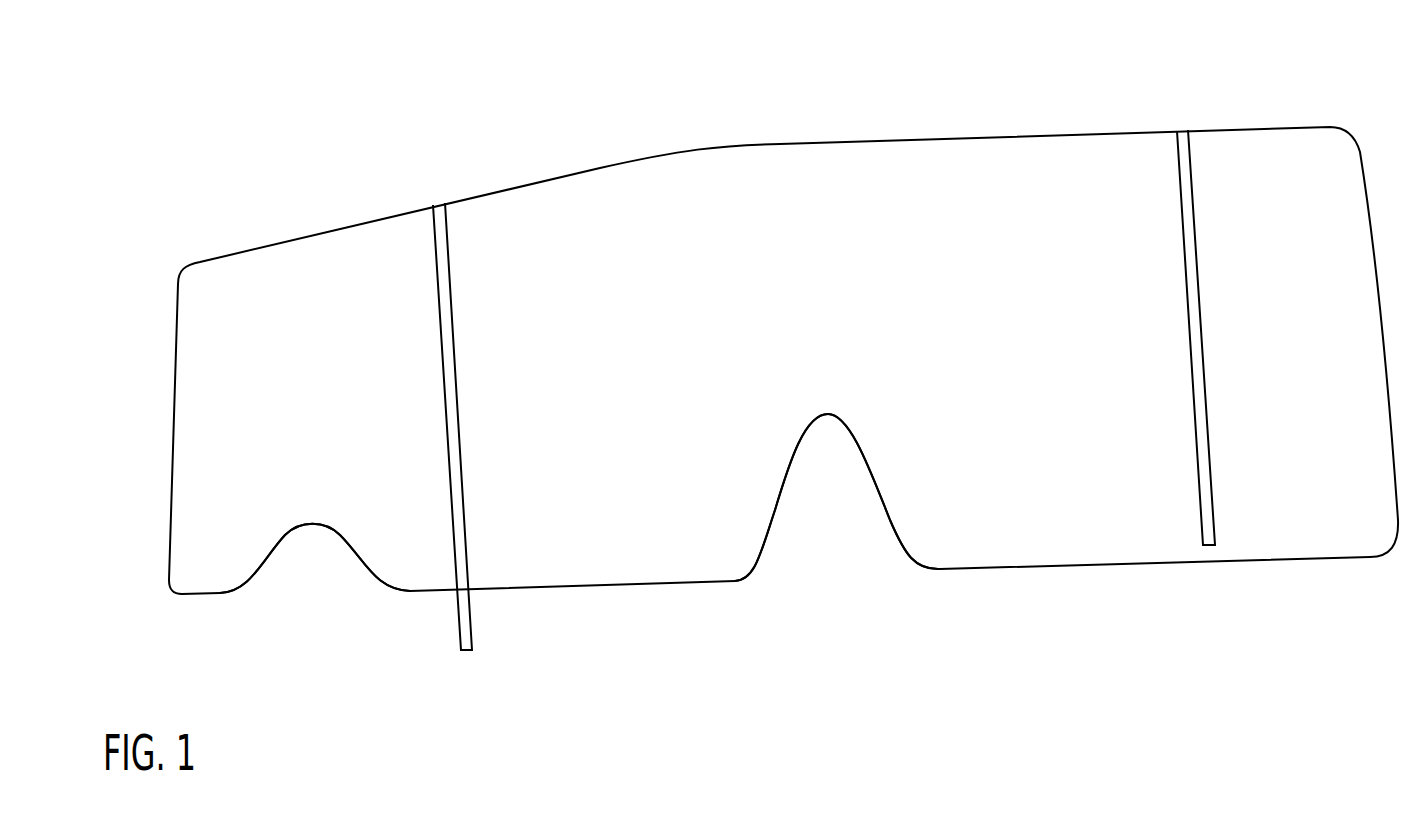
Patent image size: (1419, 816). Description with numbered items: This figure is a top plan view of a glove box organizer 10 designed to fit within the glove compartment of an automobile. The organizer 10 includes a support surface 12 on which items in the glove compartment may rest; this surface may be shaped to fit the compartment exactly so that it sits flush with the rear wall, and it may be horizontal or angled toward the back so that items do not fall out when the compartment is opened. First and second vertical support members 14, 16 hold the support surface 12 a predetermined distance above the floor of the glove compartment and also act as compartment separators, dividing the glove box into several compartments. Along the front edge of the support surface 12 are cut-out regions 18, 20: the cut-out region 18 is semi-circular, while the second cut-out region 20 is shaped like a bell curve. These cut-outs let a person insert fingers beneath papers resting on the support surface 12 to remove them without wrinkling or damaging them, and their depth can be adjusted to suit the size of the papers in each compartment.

The glove box organizer 10 is at (300, 139).
The support surface 12 is at (1003, 162).
The first vertical support member 14 is at (457, 575).
The second vertical support member 16 is at (1215, 516).
The cut-out region 18 is at (317, 545).
The second cut-out region 20 is at (832, 472).